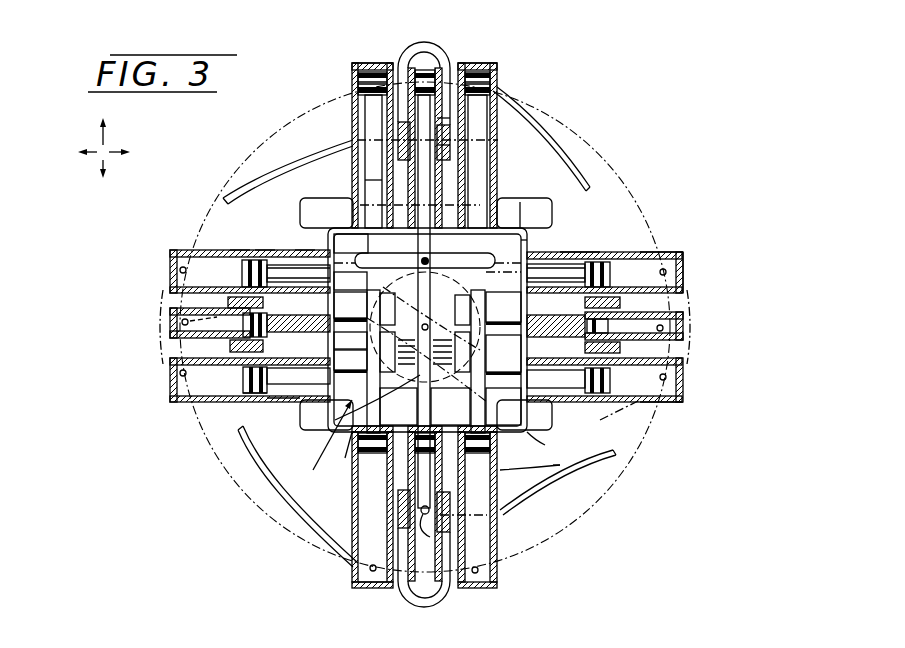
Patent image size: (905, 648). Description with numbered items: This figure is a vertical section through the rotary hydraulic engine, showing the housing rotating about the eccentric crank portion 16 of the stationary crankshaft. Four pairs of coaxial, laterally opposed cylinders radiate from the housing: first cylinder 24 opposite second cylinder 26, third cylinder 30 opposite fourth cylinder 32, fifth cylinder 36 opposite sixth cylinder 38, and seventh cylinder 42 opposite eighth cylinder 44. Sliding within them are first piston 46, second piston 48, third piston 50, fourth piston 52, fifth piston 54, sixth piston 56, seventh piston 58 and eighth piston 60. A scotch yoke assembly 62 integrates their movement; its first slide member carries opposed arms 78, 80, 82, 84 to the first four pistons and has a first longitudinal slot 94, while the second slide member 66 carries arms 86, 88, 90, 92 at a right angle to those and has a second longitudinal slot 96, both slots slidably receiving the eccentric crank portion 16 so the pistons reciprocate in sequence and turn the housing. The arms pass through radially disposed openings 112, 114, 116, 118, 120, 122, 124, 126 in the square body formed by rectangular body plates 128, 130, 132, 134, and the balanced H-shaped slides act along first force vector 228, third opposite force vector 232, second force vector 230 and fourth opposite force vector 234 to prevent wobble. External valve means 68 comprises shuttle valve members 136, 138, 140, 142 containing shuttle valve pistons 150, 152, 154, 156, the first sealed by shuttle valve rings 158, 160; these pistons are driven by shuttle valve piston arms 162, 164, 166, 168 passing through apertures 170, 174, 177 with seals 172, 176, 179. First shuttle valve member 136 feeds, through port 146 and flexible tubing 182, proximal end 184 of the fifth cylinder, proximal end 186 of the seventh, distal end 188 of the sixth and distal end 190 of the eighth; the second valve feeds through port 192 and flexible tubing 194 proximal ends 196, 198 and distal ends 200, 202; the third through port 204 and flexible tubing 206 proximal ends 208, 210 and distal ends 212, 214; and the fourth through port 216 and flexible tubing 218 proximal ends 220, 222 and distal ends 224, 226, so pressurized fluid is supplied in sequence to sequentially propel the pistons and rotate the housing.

The eccentric crank portion 16 is at (427, 330).
The first cylinder 24 is at (368, 63).
The second cylinder 26 is at (352, 584).
The third cylinder 30 is at (482, 63).
The fourth cylinder 32 is at (497, 582).
The fifth cylinder 36 is at (683, 290).
The sixth cylinder 38 is at (170, 272).
The seventh cylinder 42 is at (684, 392).
The eighth cylinder 44 is at (170, 400).
The first piston 46 is at (358, 85).
The second piston 48 is at (372, 453).
The third piston 50 is at (490, 90).
The fourth piston 52 is at (497, 462).
The fifth piston 54 is at (683, 254).
The sixth piston 56 is at (235, 252).
The seventh piston 58 is at (610, 380).
The eighth piston 60 is at (243, 398).
The scotch yoke assembly 62 is at (335, 420).
The second slide member 66 is at (503, 406).
The external valve means 68 is at (434, 45).
The arm 78 is at (365, 106).
The arm 80 is at (423, 268).
The arm 82 is at (430, 108).
The arm 84 is at (470, 280).
The arm 86 is at (262, 248).
The arm 88 is at (582, 252).
The arm 90 is at (265, 400).
The arm 92 is at (560, 405).
The first longitudinal slot 94 is at (384, 268).
The second longitudinal slot 96 is at (478, 268).
The radially disposed opening 112 is at (358, 222).
The radially disposed opening 114 is at (496, 192).
The radially disposed opening 116 is at (540, 250).
The radially disposed opening 118 is at (618, 440).
The radially disposed opening 120 is at (553, 465).
The radially disposed opening 122 is at (314, 440).
The radially disposed opening 124 is at (323, 400).
The radially disposed opening 126 is at (302, 248).
The rectangular body plate 128 is at (375, 180).
The rectangular body plate 130 is at (610, 270).
The rectangular body plate 132 is at (400, 458).
The rectangular body plate 134 is at (242, 266).
The first shuttle valve member 136 is at (450, 60).
The second shuttle valve member 138 is at (670, 312).
The third shuttle valve member 140 is at (440, 594).
The fourth shuttle valve member 142 is at (170, 327).
The port 146 is at (432, 148).
The shuttle valve piston 150 is at (442, 70).
The shuttle valve piston 152 is at (608, 330).
The shuttle valve piston 154 is at (427, 457).
The shuttle valve piston 156 is at (228, 302).
The shuttle valve ring 158 is at (408, 68).
The shuttle valve ring 160 is at (410, 43).
The shuttle valve piston arm 162 is at (447, 128).
The shuttle valve piston arm 164 is at (600, 262).
The shuttle valve piston arm 166 is at (330, 440).
The shuttle valve piston arm 168 is at (243, 378).
The aperture 170 is at (430, 248).
The seal 172 is at (423, 253).
The aperture 174 is at (445, 361).
The seal 176 is at (477, 361).
The aperture 177 is at (348, 307).
The seal 179 is at (348, 341).
The flexible tubing 182 is at (255, 172).
The proximal end of fifth cylinder 184 is at (550, 226).
The proximal end of seventh cylinder 186 is at (533, 435).
The distal end of sixth cylinder 188 is at (170, 250).
The distal end of eighth cylinder 190 is at (170, 380).
The port 192 is at (683, 346).
The flexible tubing 194 is at (585, 175).
The proximal end of second cylinder 196 is at (345, 458).
The proximal end of fourth cylinder 198 is at (560, 465).
The distal end of first cylinder 200 is at (355, 98).
The distal end of third cylinder 202 is at (497, 72).
The port 204 is at (440, 538).
The flexible tubing 206 is at (615, 453).
The proximal end of sixth cylinder 208 is at (353, 241).
The proximal end of eighth cylinder 210 is at (348, 360).
The distal end of fifth cylinder 212 is at (683, 270).
The distal end of seventh cylinder 214 is at (675, 402).
The port 216 is at (185, 350).
The flexible tubing 218 is at (287, 503).
The proximal end of first cylinder 220 is at (327, 212).
The proximal end of third cylinder 222 is at (520, 202).
The distal end of second cylinder 224 is at (363, 588).
The distal end of fourth cylinder 226 is at (490, 588).
The first force vector 228 is at (92, 130).
The second force vector 230 is at (144, 151).
The third opposite force vector 232 is at (96, 187).
The fourth opposite force vector 234 is at (67, 151).